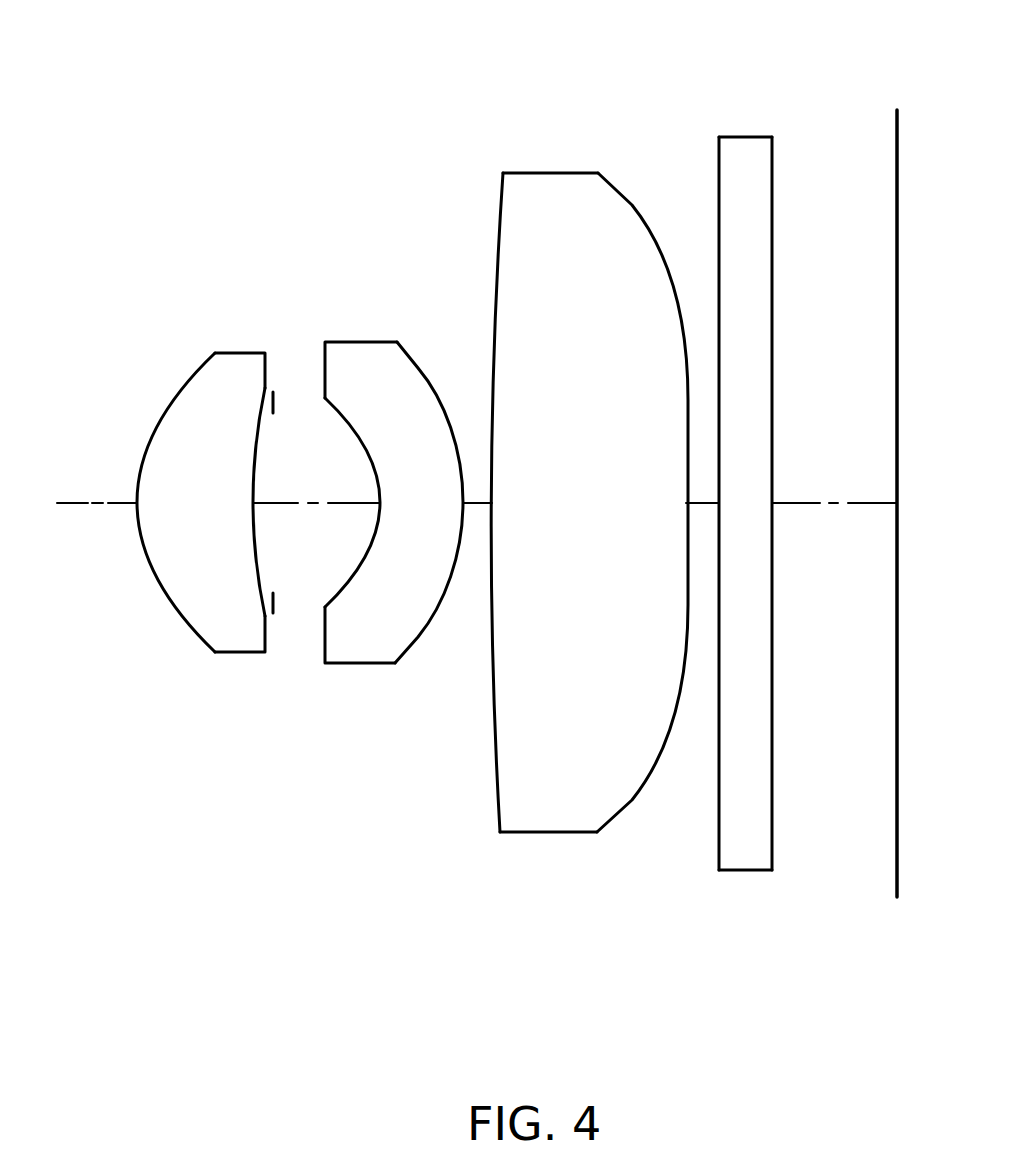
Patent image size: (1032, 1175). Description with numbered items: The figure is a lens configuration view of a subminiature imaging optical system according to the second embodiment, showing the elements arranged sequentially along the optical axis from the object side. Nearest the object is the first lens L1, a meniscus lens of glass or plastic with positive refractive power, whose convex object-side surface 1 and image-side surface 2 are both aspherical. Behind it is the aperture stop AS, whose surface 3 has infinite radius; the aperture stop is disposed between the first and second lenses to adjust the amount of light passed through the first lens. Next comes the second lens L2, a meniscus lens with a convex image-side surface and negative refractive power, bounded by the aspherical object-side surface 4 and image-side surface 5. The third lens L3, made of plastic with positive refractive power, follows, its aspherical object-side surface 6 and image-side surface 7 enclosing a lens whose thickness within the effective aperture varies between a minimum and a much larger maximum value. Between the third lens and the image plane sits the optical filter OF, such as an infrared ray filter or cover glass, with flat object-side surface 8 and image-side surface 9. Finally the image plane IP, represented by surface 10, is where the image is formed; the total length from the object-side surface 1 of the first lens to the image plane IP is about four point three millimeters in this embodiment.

The object-side surface of the first lens 1 is at (185, 377).
The image-side surface of the first lens 2 is at (270, 360).
The aperture stop surface 3 is at (277, 395).
The object-side surface of the second lens 4 is at (313, 347).
The image-side surface of the second lens 5 is at (410, 347).
The object-side surface of the third lens 6 is at (500, 203).
The image-side surface of the third lens 7 is at (633, 203).
The object-side surface of the optical filter 8 is at (720, 160).
The image-side surface of the optical filter 9 is at (773, 160).
The image plane surface 10 is at (898, 135).
The first lens L1 is at (207, 512).
The aperture stop AS is at (282, 524).
The second lens L2 is at (387, 516).
The third lens L3 is at (580, 529).
The optical filter OF is at (754, 531).
The image plane IP is at (890, 523).